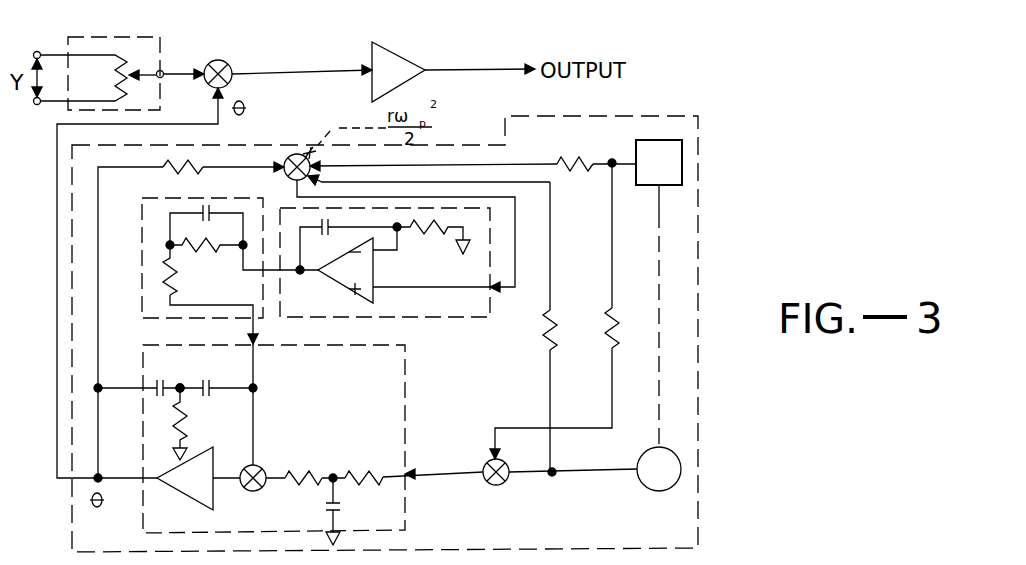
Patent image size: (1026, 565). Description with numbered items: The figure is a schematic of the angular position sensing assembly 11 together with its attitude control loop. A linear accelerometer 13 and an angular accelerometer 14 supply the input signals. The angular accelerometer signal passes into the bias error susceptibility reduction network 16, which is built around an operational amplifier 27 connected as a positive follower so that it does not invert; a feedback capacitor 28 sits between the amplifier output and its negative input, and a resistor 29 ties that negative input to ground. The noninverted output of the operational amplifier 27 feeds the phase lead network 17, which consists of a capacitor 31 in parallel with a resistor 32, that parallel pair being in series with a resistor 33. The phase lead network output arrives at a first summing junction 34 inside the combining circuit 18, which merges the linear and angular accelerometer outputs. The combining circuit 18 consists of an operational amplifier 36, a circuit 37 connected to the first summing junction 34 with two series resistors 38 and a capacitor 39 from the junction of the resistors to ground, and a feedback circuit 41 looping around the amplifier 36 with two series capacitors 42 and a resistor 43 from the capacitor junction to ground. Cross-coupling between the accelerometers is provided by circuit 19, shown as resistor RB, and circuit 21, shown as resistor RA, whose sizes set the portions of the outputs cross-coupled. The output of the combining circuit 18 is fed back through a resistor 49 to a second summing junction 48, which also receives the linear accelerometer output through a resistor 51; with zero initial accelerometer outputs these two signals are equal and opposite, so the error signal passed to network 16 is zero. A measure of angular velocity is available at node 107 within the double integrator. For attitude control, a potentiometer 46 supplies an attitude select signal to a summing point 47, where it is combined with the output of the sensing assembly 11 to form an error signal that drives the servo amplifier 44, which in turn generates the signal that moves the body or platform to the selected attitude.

The angular position sensing assembly 11 is at (700, 242).
The linear accelerometer 13 is at (683, 162).
The angular accelerometer 14 is at (661, 446).
The angular accelerometer bias error susceptibility reduction network 16 is at (427, 320).
The phase lead network 17 is at (197, 198).
The circuit for combining accelerometer outputs 18 is at (407, 406).
The circuit for coupling linear accelerometer output 19 is at (613, 318).
The circuit for coupling angular accelerometer output 21 is at (552, 318).
The operational amplifier 27 is at (348, 290).
The feedback capacitor 28 is at (337, 241).
The resistor 29 is at (430, 238).
The capacitor 31 is at (197, 212).
The resistor 32 is at (217, 252).
The resistor 33 is at (163, 282).
The first summing junction 34 is at (260, 464).
The operational amplifier 36 is at (197, 498).
The circuit 37 is at (370, 504).
The series resistors 38 is at (357, 473).
The capacitor 39 is at (325, 500).
The feedback circuit 41 is at (200, 411).
The series capacitors 42 is at (205, 380).
The resistor 43 is at (173, 431).
The servo amplifier 44 is at (404, 63).
The potentiometer 46 is at (131, 62).
The summing point 47 is at (228, 61).
The second summing junction 48 is at (293, 153).
The resistor 49 is at (197, 162).
The resistor 51 is at (579, 160).
The node 107 is at (177, 402).